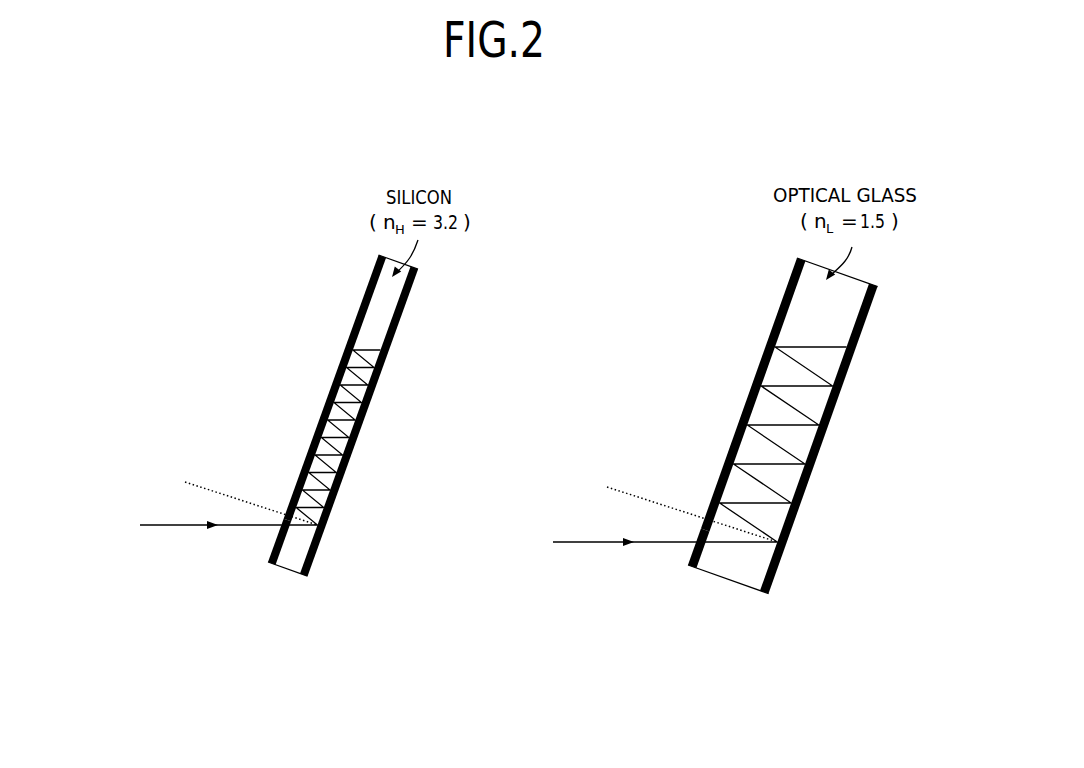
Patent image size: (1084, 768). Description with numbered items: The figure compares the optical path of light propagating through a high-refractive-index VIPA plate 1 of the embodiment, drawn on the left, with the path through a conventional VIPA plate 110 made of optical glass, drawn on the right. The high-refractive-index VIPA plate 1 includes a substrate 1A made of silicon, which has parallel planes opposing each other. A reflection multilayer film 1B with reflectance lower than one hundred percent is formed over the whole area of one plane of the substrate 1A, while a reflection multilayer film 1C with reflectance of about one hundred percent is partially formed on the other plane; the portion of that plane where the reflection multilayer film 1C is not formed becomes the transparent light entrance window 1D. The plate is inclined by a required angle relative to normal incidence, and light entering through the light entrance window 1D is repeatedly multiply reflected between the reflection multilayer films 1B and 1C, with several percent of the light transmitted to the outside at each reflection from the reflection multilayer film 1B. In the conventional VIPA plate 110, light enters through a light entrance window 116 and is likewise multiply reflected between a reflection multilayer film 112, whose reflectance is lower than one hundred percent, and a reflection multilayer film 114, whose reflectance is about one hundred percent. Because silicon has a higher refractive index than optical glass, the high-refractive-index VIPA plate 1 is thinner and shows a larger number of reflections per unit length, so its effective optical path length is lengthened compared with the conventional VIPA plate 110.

The high-refractive-index VIPA plate 1 is at (273, 342).
The substrate 1A is at (285, 570).
The reflection multilayer film 1B is at (368, 280).
The reflection multilayer film 1C is at (317, 558).
The light entrance window 1D is at (272, 543).
The VIPA plate 110 is at (688, 355).
The reflection multilayer film 112 is at (776, 580).
The reflection multilayer film 114 is at (786, 287).
The light entrance window 116 is at (691, 554).